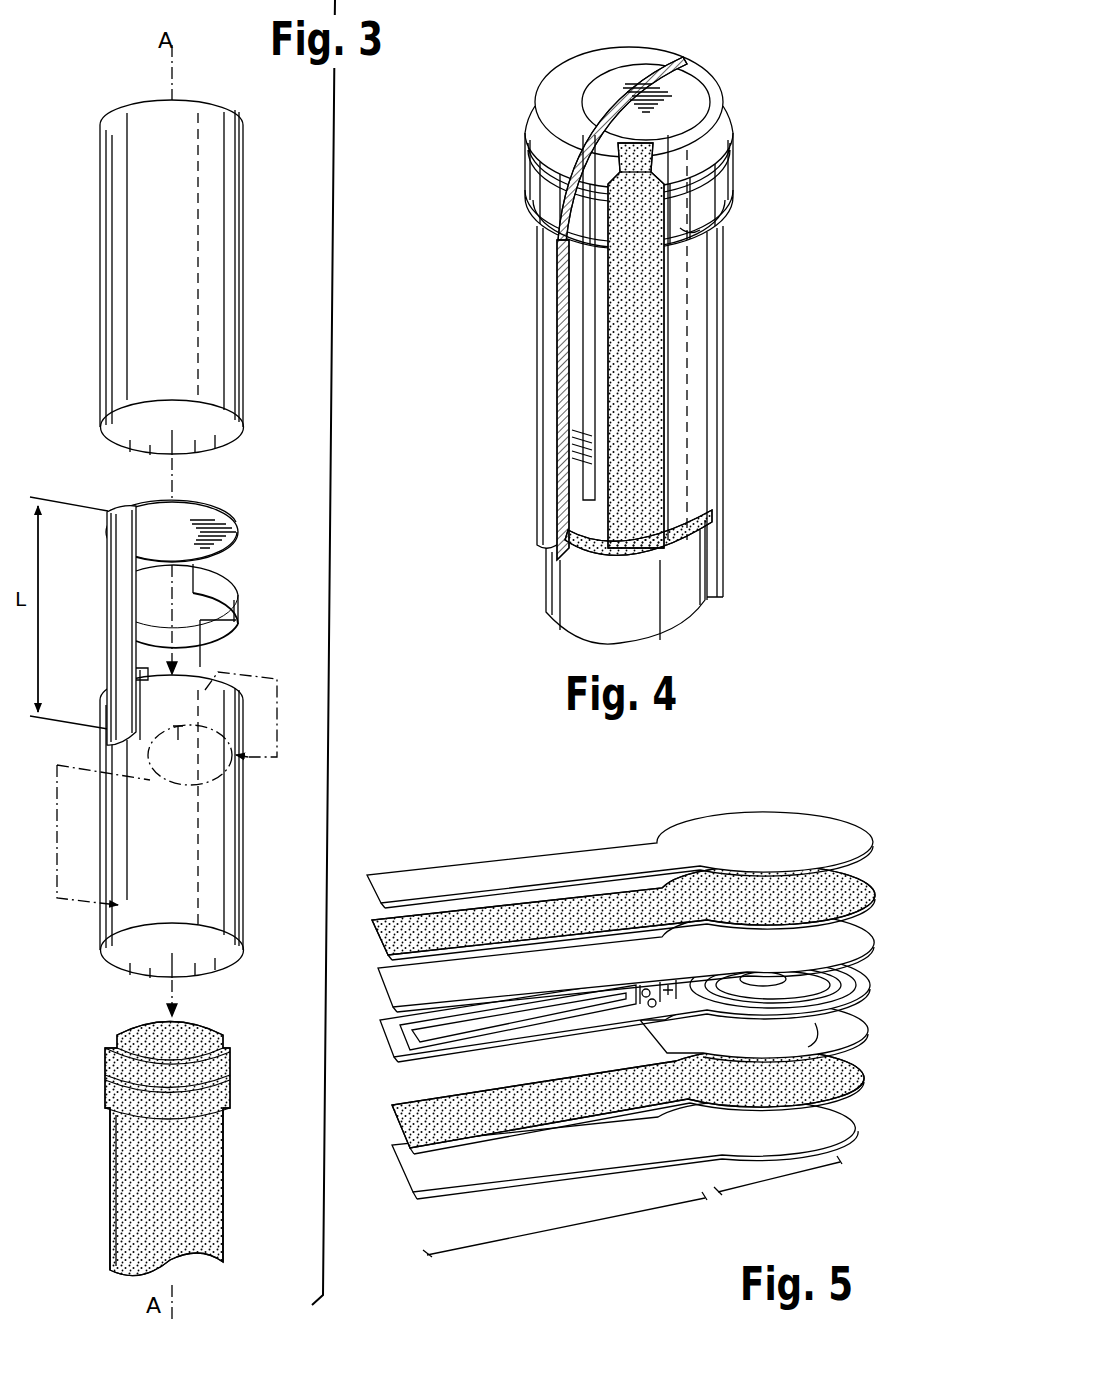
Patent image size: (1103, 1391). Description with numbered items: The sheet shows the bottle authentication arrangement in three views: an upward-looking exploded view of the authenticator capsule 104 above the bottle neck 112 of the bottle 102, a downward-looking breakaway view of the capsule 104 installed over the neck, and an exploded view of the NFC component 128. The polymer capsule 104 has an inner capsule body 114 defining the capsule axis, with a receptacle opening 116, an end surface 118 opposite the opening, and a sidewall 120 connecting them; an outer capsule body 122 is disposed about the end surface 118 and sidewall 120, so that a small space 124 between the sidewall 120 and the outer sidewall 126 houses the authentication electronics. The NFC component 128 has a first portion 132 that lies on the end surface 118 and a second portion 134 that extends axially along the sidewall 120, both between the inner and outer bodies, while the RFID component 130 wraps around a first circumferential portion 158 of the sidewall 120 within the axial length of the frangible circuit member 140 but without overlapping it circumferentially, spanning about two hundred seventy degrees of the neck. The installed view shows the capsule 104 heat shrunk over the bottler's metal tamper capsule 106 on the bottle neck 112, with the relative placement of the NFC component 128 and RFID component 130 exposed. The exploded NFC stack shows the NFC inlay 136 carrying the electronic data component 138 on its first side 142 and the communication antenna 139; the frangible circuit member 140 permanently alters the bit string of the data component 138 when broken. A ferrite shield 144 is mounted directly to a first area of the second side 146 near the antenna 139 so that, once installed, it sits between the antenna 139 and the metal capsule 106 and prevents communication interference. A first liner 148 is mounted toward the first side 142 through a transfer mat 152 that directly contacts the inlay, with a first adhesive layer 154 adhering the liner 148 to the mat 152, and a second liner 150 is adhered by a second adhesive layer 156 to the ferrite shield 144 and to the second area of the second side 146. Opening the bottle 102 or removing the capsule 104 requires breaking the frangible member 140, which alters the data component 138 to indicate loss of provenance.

In FIG. 3, the bottle 102 is at (237, 1165).
In FIG. 3, the authenticator capsule 104 is at (46, 372).
In FIG. 4, the authenticator capsule 104 is at (516, 106).
In FIG. 3, the metal tamper capsule 106 is at (121, 1166).
In FIG. 4, the metal tamper capsule 106 is at (636, 546).
In FIG. 3, the bottle neck 112 is at (112, 1239).
In FIG. 4, the bottle neck 112 is at (546, 583).
In FIG. 4, the inner capsule body 114 is at (746, 130).
In FIG. 3, the receptacle opening 116 is at (246, 906).
In FIG. 3, the end surface 118 is at (226, 673).
In FIG. 3, the sidewall 120 is at (111, 869).
In FIG. 3, the outer capsule body 122 is at (96, 152).
In FIG. 4, the outer capsule body 122 is at (538, 286).
In FIG. 3, the small space 124 is at (211, 410).
In FIG. 3, the sidewall of the outer capsule 126 is at (113, 218).
In FIG. 3, the NFC component 128 is at (242, 522).
In FIG. 4, the NFC component 128 is at (581, 401).
In FIG. 3, the RFID component 130 is at (247, 587).
In FIG. 4, the RFID component 130 is at (739, 181).
In FIG. 3, the first portion 132 is at (146, 508).
In FIG. 4, the first portion 132 is at (674, 90).
In FIG. 5, the first portion 132 is at (796, 1183).
In FIG. 3, the second portion 134 is at (107, 582).
In FIG. 4, the second portion 134 is at (578, 348).
In FIG. 5, the second portion 134 is at (586, 1233).
In FIG. 5, the NFC inlay 136 is at (859, 1001).
In FIG. 5, the electronic data component 138 is at (864, 1030).
In FIG. 5, the communication antenna 139 is at (792, 1011).
In FIG. 3, the frangible circuit member 140 is at (109, 648).
In FIG. 5, the frangible circuit member 140 is at (401, 1044).
In FIG. 5, the first side 142 is at (862, 976).
In FIG. 5, the ferrite shield 144 is at (846, 1036).
In FIG. 5, the second side 146 is at (800, 1049).
In FIG. 5, the first liner 148 is at (838, 830).
In FIG. 5, the second liner 150 is at (829, 1124).
In FIG. 5, the transfer mat 152 is at (862, 933).
In FIG. 5, the first adhesive layer 154 is at (873, 883).
In FIG. 5, the second adhesive layer 156 is at (839, 1069).
In FIG. 3, the first circumferential portion 158 is at (190, 755).
In FIG. 4, the first circumferential portion 158 is at (691, 231).